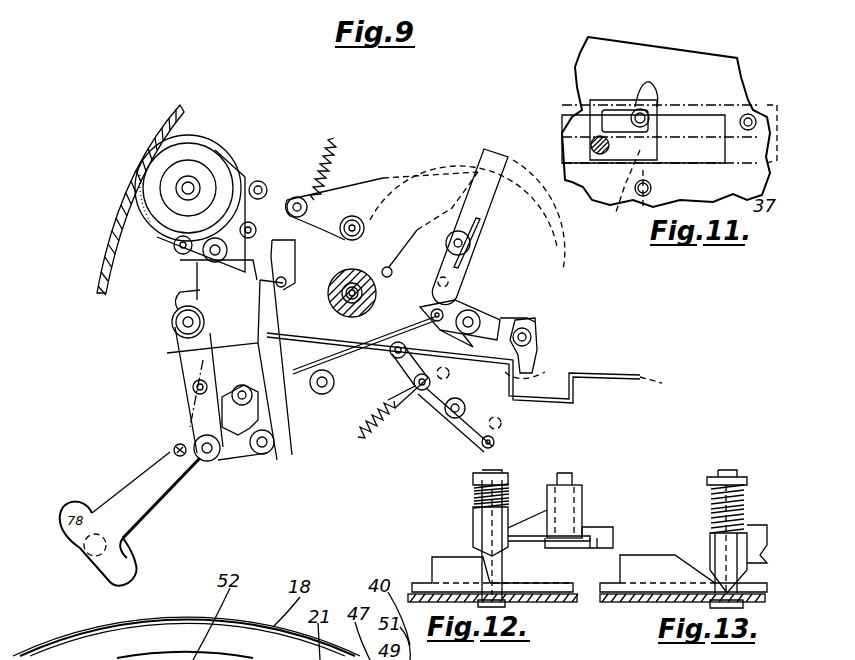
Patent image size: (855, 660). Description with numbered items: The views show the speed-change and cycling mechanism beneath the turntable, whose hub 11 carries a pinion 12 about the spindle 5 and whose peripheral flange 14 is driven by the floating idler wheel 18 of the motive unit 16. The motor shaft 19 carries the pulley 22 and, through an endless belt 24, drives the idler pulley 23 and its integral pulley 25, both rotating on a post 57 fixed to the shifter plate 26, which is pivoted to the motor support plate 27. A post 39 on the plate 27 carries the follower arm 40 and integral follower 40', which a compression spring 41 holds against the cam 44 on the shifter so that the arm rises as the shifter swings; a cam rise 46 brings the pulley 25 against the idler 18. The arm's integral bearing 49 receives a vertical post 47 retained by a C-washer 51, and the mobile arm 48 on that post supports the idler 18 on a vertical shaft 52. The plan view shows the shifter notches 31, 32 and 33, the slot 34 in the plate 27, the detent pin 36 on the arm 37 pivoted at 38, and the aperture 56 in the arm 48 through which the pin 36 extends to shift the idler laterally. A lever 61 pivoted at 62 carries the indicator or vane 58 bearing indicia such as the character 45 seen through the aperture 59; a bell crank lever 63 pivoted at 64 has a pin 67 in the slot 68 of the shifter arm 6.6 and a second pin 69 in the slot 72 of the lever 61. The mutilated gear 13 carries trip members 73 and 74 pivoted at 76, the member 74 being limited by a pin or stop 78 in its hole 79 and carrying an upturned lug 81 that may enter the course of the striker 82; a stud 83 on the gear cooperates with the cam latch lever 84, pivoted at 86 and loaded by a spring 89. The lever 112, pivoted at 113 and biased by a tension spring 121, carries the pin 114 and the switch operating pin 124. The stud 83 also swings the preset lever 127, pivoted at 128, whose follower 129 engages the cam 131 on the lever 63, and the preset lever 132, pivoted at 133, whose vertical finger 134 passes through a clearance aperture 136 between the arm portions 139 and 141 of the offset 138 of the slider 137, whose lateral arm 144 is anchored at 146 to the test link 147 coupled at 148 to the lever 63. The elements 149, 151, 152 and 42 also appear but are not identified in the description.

In FIG. 9, the depending peripheral flange 14 is at (107, 212).
In FIG. 9, the vertical shaft 52 is at (188, 187).
In FIG. 11, the vertical shaft 52 is at (592, 147).
In FIG. 9, the floating idler wheel 18 is at (210, 142).
In FIG. 9, the pulley 22 is at (157, 237).
In FIG. 9, the motor shaft 19 is at (175, 247).
In FIG. 9, the pulley 25 is at (218, 260).
In FIG. 9, the vertical post 47 is at (258, 180).
In FIG. 12, the vertical post 47 is at (567, 473).
In FIG. 9, the follower arm 40 is at (258, 235).
In FIG. 12, the follower arm 40 is at (549, 488).
In FIG. 13, the follower arm 40 is at (761, 526).
In FIG. 9, the cam rise 46 is at (214, 232).
In FIG. 9, the shifter plate 26 is at (140, 203).
In FIG. 9, the motive unit 16 is at (153, 274).
In FIG. 9, the endless belt 24 is at (178, 282).
In FIG. 9, the post 57 is at (226, 293).
In FIG. 9, the follower 40' is at (248, 293).
In FIG. 12, the follower 40' is at (520, 540).
In FIG. 13, the follower 40' is at (711, 551).
In FIG. 9, the idler pulley 23 is at (233, 309).
In FIG. 9, the integral bearing 49 is at (270, 170).
In FIG. 12, the integral bearing 49 is at (578, 503).
In FIG. 9, the lever 151 is at (297, 198).
In FIG. 9, the pin 152 is at (272, 190).
In FIG. 9, the spring end 149 is at (334, 138).
In FIG. 9, the spring 89 is at (337, 169).
In FIG. 9, the cam latch lever 84 is at (358, 190).
In FIG. 9, the pivot 86 is at (364, 234).
In FIG. 9, the stud 83 is at (430, 224).
In FIG. 9, the mutilated gear 13 is at (462, 157).
In FIG. 9, the striker 82 is at (330, 292).
In FIG. 9, the spindle 5 is at (352, 280).
In FIG. 9, the pinion 12 is at (378, 260).
In FIG. 9, the upturned lug 81 is at (386, 327).
In FIG. 9, the hole 79 is at (437, 312).
In FIG. 9, the trip member 73 is at (418, 278).
In FIG. 9, the pin or stop 78 is at (468, 310).
In FIG. 9, the pivot 76 is at (527, 318).
In FIG. 9, the trip member 74 is at (520, 315).
In FIG. 9, the preset lever 132 is at (537, 310).
In FIG. 9, the pivot 133 is at (540, 327).
In FIG. 9, the vertical finger 134 is at (537, 357).
In FIG. 9, the clearance aperture 136 is at (548, 370).
In FIG. 9, the hub 11 is at (464, 365).
In FIG. 9, the preset lever 127 is at (363, 370).
In FIG. 9, the arm portion 139 is at (513, 390).
In FIG. 9, the offset 138 is at (575, 402).
In FIG. 9, the arm portion 141 is at (578, 398).
In FIG. 9, the slider 137 is at (627, 380).
In FIG. 9, the switch operating pin 124 is at (461, 376).
In FIG. 9, the pin 114 is at (500, 414).
In FIG. 9, the lever 112 is at (397, 393).
In FIG. 9, the pivot 113 is at (447, 417).
In FIG. 9, the tension spring 121 is at (382, 440).
In FIG. 9, the pivot 128 is at (380, 448).
In FIG. 9, the arm 6.6 is at (172, 322).
In FIG. 9, the slot 68 is at (178, 333).
In FIG. 9, the pin 67 is at (180, 358).
In FIG. 9, the bell crank lever 63 is at (195, 370).
In FIG. 9, the second pin 69 is at (193, 390).
In FIG. 9, the slot 72 is at (185, 405).
In FIG. 9, the pivot 62 is at (175, 448).
In FIG. 9, the follower 129 is at (240, 386).
In FIG. 9, the cam 131 is at (250, 377).
In FIG. 9, the pivot 148 is at (275, 447).
In FIG. 9, the pivot 64 is at (207, 462).
In FIG. 9, the test link 147 is at (240, 465).
In FIG. 9, the lateral arm 144 is at (280, 300).
In FIG. 9, the pivotal anchor 146 is at (285, 275).
In FIG. 9, the lever 61 is at (138, 505).
In FIG. 9, the indicator 58 is at (58, 522).
In FIG. 9, the aperture 59 is at (80, 550).
In FIG. 9, the indicium 45 is at (95, 545).
In FIG. 12, the indicium 45 is at (496, 558).
In FIG. 13, the indicium 45 is at (715, 577).
In FIG. 9, the notch 33 is at (116, 573).
In FIG. 11, the notch 33 is at (685, 120).
In FIG. 11, the motor support plate 27 is at (575, 58).
In FIG. 12, the motor support plate 27 is at (543, 603).
In FIG. 13, the motor support plate 27 is at (637, 603).
In FIG. 11, the aperture 56 is at (580, 55).
In FIG. 11, the detent pin 36 is at (620, 100).
In FIG. 11, the slot 34 is at (648, 90).
In FIG. 11, the notch 32 is at (650, 100).
In FIG. 11, the arm 37 is at (575, 80).
In FIG. 11, the notch 31 is at (590, 105).
In FIG. 11, the mobile arm 48 is at (597, 128).
In FIG. 12, the mobile arm 48 is at (597, 533).
In FIG. 11, the pivot 38 is at (752, 112).
In FIG. 12, the cam 44 is at (430, 565).
In FIG. 13, the cam 44 is at (640, 560).
In FIG. 12, the post 39 is at (487, 567).
In FIG. 13, the post 39 is at (725, 470).
In FIG. 12, the compression spring 41 is at (473, 500).
In FIG. 13, the compression spring 41 is at (715, 502).
In FIG. 12, the C-washer 51 is at (578, 500).
In FIG. 13, the head 42 is at (742, 478).